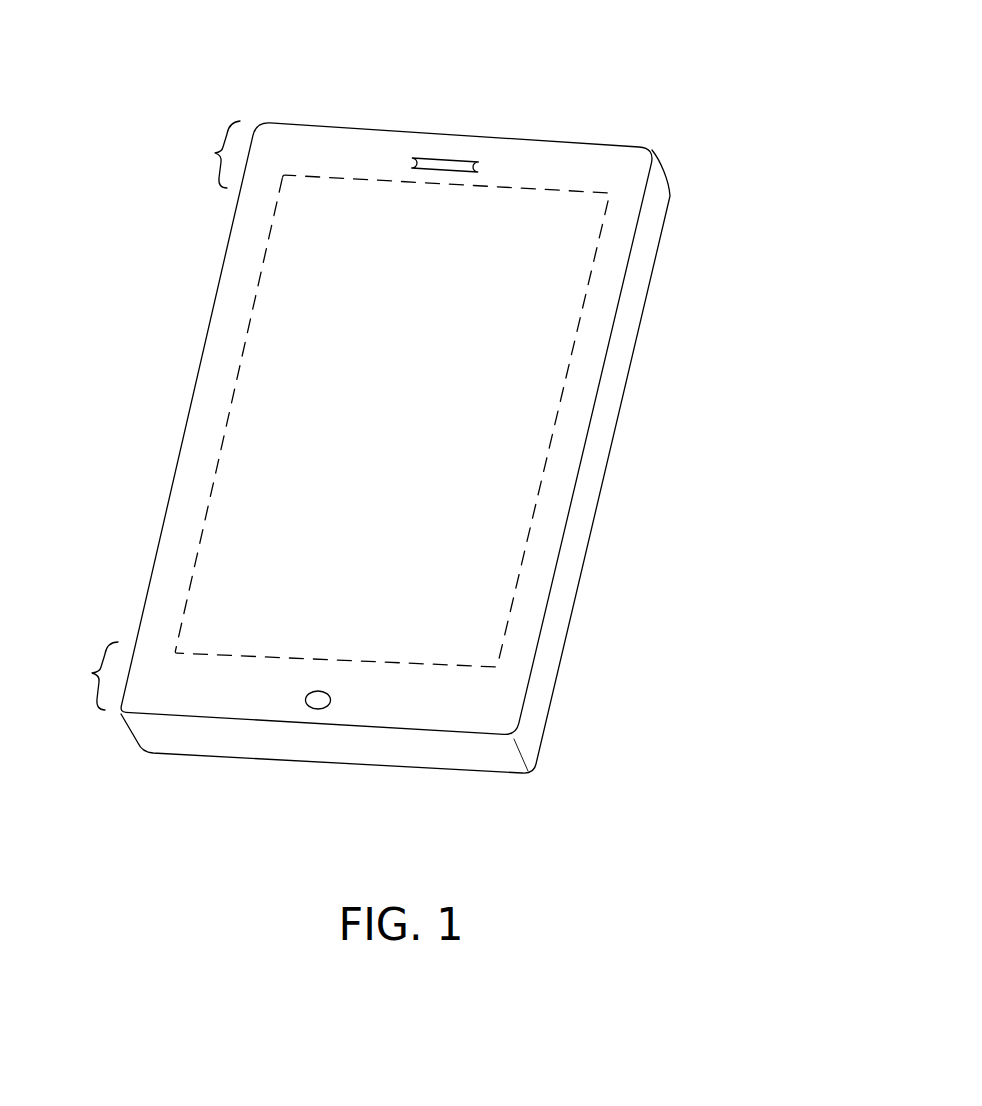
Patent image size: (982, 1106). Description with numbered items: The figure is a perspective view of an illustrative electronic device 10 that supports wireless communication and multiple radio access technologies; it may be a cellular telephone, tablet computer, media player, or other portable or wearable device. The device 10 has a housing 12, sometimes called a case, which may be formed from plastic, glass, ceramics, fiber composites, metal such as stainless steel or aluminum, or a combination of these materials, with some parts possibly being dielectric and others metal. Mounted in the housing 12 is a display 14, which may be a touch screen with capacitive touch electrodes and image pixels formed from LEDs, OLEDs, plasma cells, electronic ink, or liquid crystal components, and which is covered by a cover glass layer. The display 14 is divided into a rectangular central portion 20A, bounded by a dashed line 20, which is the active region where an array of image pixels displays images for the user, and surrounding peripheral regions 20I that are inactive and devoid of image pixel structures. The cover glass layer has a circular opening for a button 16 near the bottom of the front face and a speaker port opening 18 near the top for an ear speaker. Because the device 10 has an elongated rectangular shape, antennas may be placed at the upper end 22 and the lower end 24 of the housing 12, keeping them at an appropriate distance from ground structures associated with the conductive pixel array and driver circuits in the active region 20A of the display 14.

The electronic device 10 is at (732, 70).
The housing 12 is at (652, 289).
The display 14 is at (540, 410).
The button 16 is at (321, 710).
The speaker port opening 18 is at (438, 160).
The dashed line 20 is at (223, 442).
The rectangular central portion 20A is at (237, 525).
The peripheral regions 20I is at (532, 163).
The upper end 22 is at (207, 154).
The lower end 24 is at (86, 676).